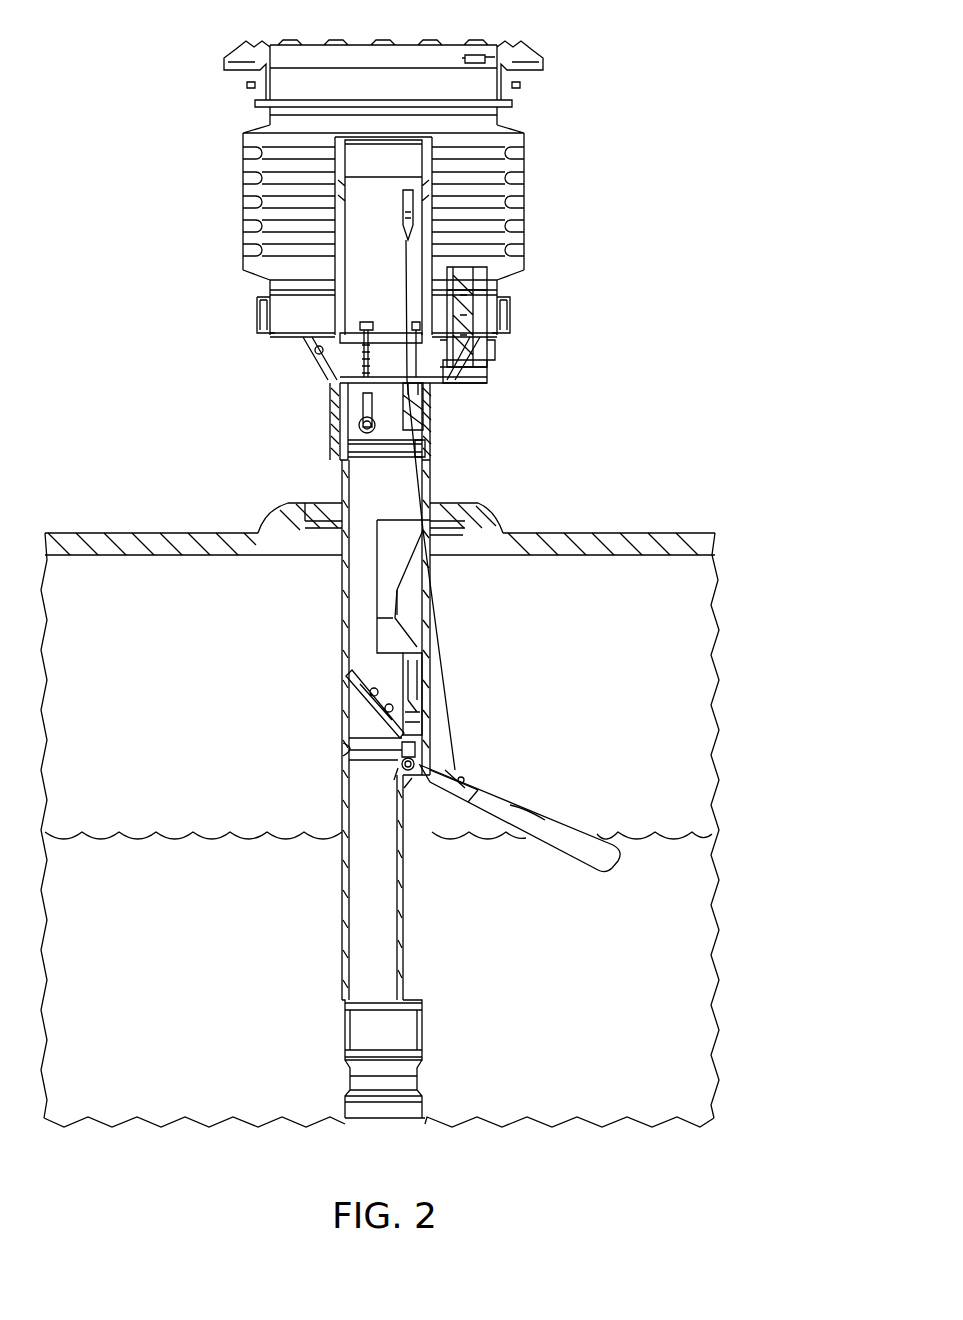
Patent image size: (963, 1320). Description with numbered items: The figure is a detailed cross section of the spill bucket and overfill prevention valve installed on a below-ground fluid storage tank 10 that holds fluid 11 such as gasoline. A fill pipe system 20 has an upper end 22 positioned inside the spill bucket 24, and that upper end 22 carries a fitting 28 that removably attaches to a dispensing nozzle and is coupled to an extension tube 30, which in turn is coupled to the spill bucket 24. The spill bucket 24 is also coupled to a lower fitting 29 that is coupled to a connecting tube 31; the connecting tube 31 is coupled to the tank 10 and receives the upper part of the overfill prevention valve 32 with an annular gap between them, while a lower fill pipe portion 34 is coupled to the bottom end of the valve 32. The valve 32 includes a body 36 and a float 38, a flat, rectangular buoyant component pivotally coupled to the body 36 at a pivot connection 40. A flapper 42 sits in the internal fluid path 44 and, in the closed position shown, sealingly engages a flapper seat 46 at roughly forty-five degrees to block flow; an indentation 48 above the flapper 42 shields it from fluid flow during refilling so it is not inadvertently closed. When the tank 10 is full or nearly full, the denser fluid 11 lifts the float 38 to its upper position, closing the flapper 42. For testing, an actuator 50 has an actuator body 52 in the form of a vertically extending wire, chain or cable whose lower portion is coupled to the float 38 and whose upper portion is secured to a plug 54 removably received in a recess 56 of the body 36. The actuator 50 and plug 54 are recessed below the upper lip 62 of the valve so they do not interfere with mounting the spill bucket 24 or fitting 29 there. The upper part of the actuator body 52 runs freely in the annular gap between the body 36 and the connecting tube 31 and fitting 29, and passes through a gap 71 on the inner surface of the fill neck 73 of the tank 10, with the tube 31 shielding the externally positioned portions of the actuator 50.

The fluid storage tank 10 is at (620, 533).
The fluid 11 is at (172, 856).
The fill pipe system 20 is at (462, 440).
The upper end 22 is at (445, 142).
The spill bucket 24 is at (527, 202).
The fitting 28 is at (430, 180).
The lower fitting 29 is at (425, 446).
The extension tube 30 is at (440, 262).
The connecting tube 31 is at (340, 446).
The overfill prevention valve 32 is at (326, 760).
The lower fill pipe portion 34 is at (422, 1112).
The body 36 is at (342, 486).
The float 38 is at (546, 826).
The pivot connection 40 is at (410, 782).
The flapper 42 is at (350, 672).
The fluid path 44 is at (349, 616).
The flapper seat 46 is at (420, 716).
The indentation 48 is at (405, 602).
The actuator 50 is at (460, 488).
The actuator body 52 is at (406, 282).
The plug 54 is at (403, 205).
The recess 56 is at (428, 388).
The upper lip 62 is at (336, 380).
The gap 71 is at (350, 533).
The fill neck 73 is at (292, 520).